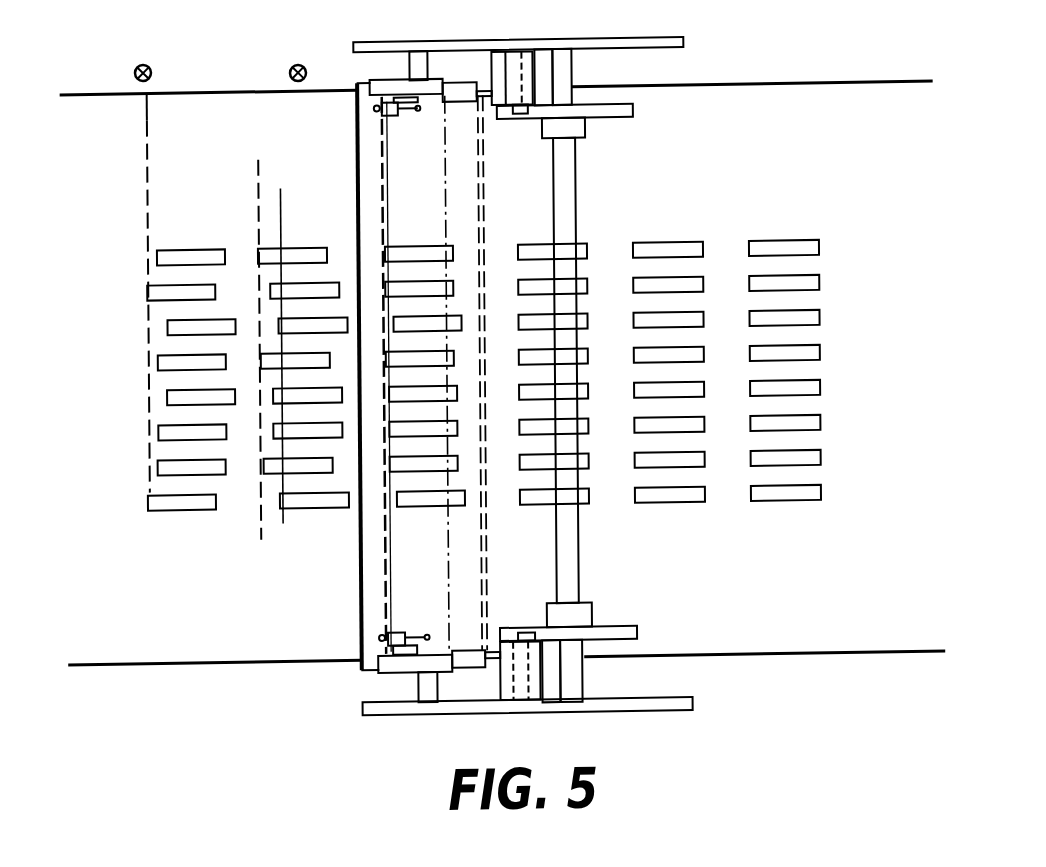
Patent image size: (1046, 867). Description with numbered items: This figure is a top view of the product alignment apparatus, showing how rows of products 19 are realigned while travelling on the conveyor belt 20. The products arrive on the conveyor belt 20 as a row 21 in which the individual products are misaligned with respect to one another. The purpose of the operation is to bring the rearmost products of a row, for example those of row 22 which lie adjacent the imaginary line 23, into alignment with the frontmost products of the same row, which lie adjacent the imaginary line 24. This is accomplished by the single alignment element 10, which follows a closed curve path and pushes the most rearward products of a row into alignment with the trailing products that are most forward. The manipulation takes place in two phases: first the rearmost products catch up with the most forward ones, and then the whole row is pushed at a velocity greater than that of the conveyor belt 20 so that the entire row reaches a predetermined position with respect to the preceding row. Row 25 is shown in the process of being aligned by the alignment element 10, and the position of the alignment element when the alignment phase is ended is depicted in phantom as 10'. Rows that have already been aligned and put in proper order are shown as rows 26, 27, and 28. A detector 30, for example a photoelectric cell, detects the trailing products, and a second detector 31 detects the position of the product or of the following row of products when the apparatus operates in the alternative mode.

The alignment element 10 is at (405, 375).
The alignment element end position 10' is at (509, 372).
The rows of products 19 is at (789, 247).
The conveyor belt 20 is at (864, 88).
The row of misaligned products 21 is at (184, 510).
The row with rearmost products 22 is at (316, 511).
The imaginary line 23 is at (259, 171).
The imaginary line 24 is at (284, 195).
The row being aligned 25 is at (427, 511).
The aligned row 26 is at (545, 510).
The aligned row 27 is at (674, 512).
The aligned row 28 is at (786, 369).
The detector 30 is at (300, 62).
The second detector 31 is at (142, 59).